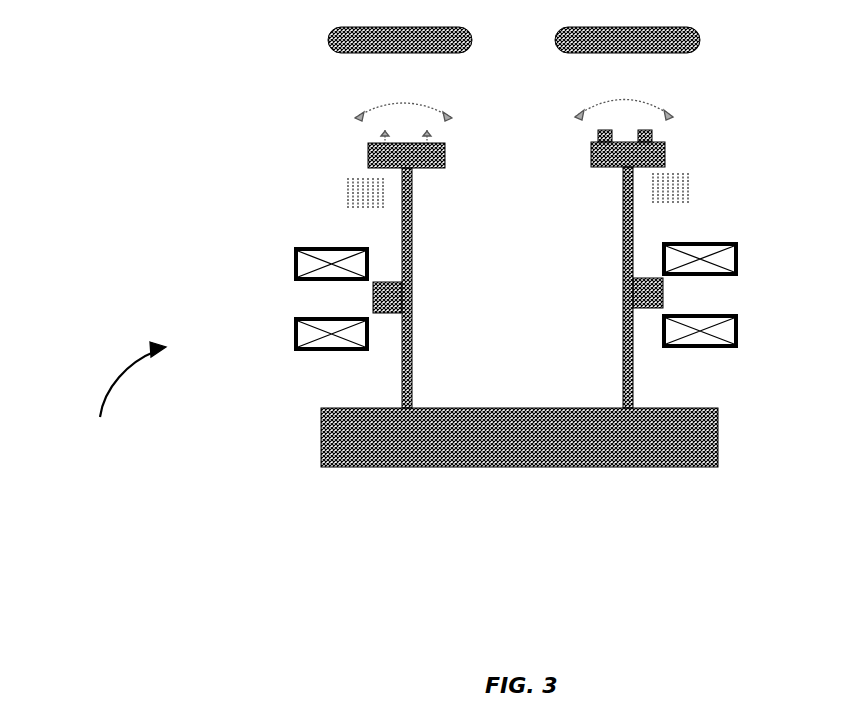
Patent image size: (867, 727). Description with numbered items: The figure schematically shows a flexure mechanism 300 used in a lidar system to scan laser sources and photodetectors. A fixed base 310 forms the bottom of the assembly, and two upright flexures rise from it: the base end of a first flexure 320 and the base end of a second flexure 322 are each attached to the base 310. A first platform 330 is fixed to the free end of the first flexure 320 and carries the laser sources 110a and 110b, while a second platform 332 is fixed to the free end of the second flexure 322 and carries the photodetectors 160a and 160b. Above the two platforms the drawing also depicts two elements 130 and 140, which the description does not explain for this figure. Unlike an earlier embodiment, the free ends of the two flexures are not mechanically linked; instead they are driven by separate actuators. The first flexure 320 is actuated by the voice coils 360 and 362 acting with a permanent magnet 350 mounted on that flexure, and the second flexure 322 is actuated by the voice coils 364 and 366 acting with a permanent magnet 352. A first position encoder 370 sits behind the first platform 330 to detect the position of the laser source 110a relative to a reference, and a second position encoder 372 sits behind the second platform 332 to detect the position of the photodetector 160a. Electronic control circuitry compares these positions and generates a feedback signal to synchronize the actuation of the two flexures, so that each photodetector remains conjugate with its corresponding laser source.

The flexure mechanism 300 is at (120, 397).
The first touch surface / contact plate 130 is at (329, 37).
The second touch surface / contact plate 140 is at (699, 40).
The fixed base 310 is at (705, 443).
The first flexure 320 is at (402, 378).
The second flexure 322 is at (633, 387).
The first platform 330 is at (423, 160).
The second platform 332 is at (607, 164).
The laser source 110a is at (384, 138).
The laser source 110b is at (427, 142).
The photodetector 160a is at (600, 137).
The photodetector 160b is at (650, 136).
The permanent magnet 350 is at (392, 299).
The permanent magnet 352 is at (640, 291).
The voice coil 360 is at (296, 278).
The voice coil 362 is at (297, 334).
The voice coil 364 is at (724, 276).
The voice coil 366 is at (737, 338).
The first position encoder 370 is at (347, 178).
The second position encoder 372 is at (677, 192).